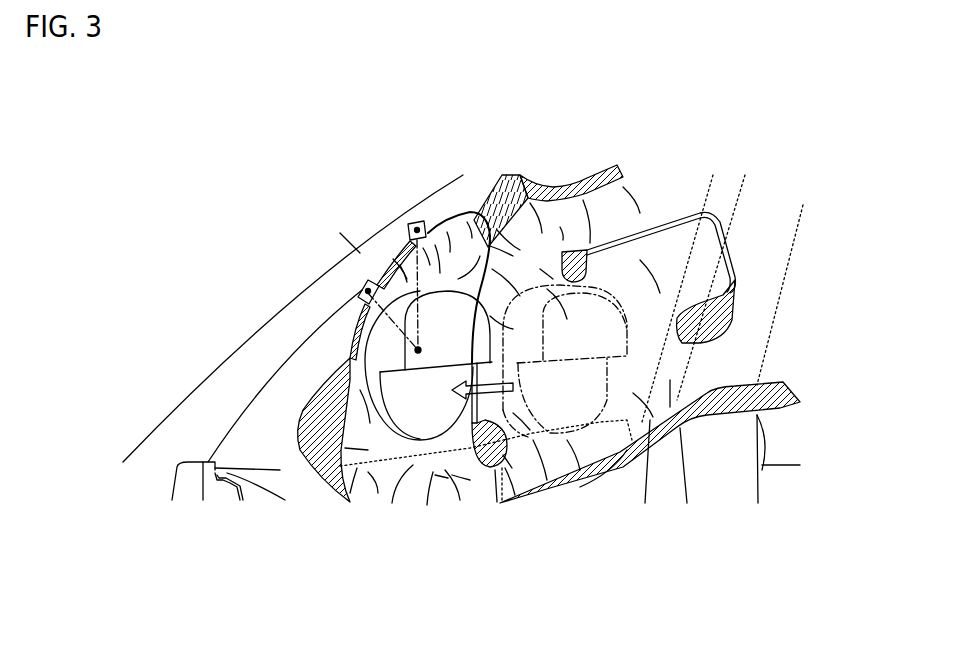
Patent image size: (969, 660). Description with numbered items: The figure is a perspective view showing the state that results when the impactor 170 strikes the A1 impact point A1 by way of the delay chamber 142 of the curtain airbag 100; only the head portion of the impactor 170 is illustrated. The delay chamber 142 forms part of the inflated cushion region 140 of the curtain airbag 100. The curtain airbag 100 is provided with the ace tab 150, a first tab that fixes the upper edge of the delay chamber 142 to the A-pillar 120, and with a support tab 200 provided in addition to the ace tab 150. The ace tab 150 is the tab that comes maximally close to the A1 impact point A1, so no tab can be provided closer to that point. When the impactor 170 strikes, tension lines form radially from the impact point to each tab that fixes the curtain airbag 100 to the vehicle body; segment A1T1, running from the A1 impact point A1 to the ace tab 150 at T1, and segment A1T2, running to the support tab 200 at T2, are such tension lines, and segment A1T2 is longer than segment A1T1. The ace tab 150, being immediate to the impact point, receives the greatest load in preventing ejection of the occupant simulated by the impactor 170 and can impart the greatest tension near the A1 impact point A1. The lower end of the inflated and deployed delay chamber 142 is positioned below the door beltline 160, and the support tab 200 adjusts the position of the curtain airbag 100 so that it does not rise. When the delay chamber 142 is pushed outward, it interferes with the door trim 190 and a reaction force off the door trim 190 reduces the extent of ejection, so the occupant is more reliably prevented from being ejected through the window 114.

The curtain airbag 100 is at (450, 557).
The window 114 is at (256, 402).
The A-pillar 120 is at (257, 341).
The airbag cushion 140 is at (562, 472).
The delay chamber 142 is at (348, 497).
The ace tab 150 is at (368, 278).
The door beltline 160 is at (275, 468).
The impactor 170 is at (418, 443).
The door trim 190 is at (300, 492).
The support tab 200 is at (420, 220).
The ace tab end point of tension line T1 is at (362, 288).
The support tab end point of tension line T2 is at (412, 227).
The A1 impact point A1 is at (407, 301).